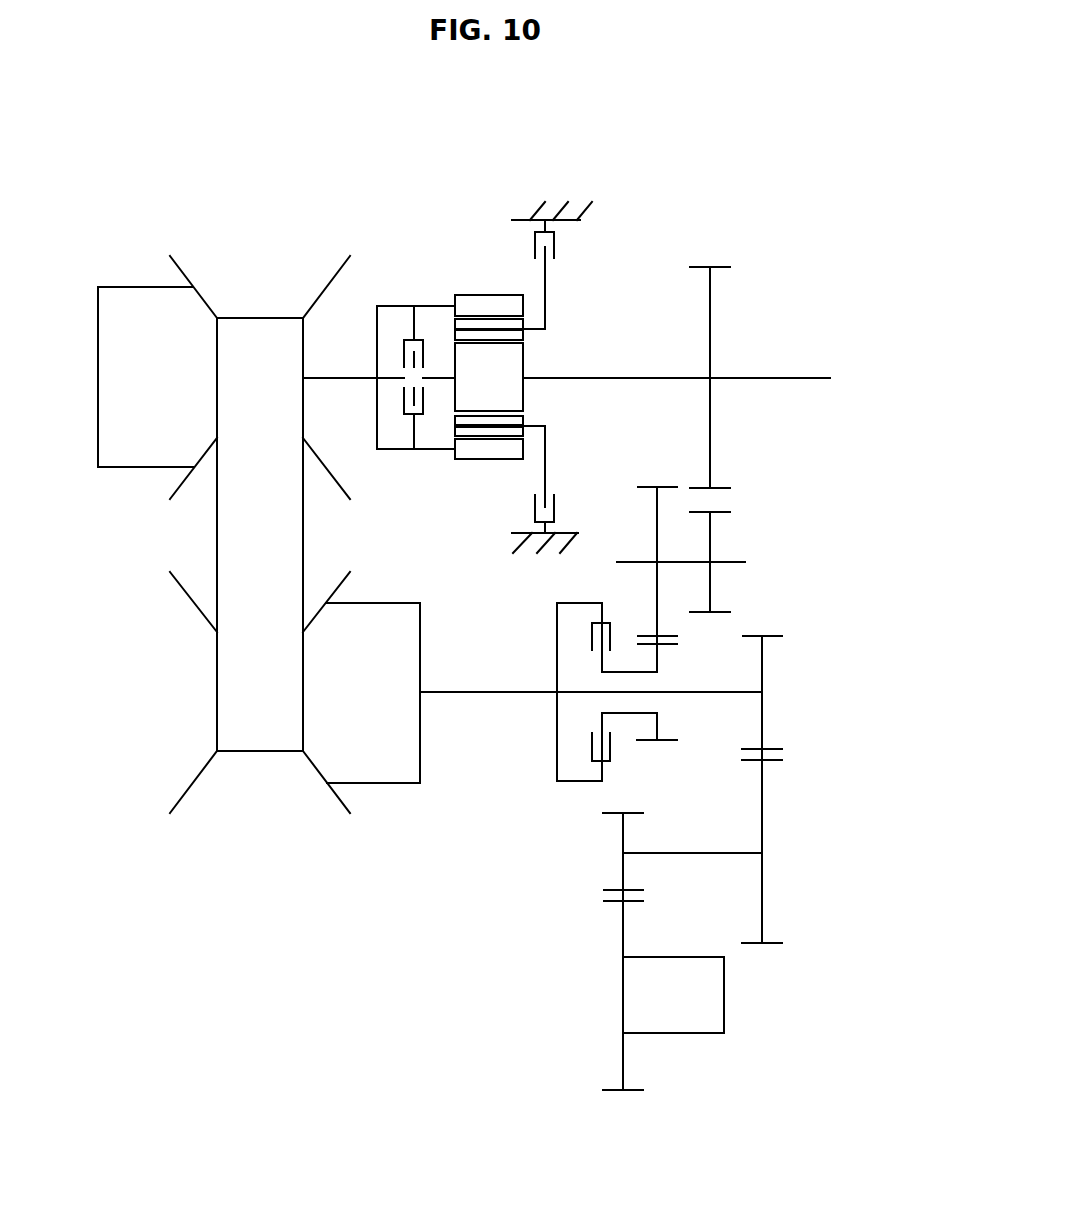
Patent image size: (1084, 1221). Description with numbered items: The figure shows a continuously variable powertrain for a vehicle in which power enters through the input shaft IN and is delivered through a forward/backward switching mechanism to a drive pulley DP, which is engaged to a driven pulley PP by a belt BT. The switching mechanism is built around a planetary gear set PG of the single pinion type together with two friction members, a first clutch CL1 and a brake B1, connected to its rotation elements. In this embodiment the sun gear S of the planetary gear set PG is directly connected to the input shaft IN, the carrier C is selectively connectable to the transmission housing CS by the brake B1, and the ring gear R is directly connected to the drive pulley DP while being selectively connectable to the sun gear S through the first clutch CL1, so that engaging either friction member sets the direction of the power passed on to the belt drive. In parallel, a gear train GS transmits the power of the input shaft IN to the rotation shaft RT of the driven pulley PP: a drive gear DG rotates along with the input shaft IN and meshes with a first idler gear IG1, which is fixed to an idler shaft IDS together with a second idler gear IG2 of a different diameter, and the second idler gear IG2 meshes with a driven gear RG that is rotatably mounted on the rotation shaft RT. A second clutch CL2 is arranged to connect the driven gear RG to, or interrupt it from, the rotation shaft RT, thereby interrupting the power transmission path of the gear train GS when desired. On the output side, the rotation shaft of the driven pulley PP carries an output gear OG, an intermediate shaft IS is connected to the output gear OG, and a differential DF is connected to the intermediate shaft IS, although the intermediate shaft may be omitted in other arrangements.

The drive pulley DP is at (185, 270).
The driven pulley PP is at (187, 802).
The belt BT is at (217, 542).
The first clutch CL1 is at (410, 338).
The planetary gear set PG is at (533, 352).
The ring gear R is at (483, 295).
The sun gear S is at (524, 365).
The carrier C is at (546, 305).
The transmission housing CS is at (533, 217).
The brake B1 is at (555, 245).
The input shaft IN is at (795, 377).
The drive gear DG is at (730, 487).
The first idler gear IG1 is at (730, 512).
The second idler gear IG2 is at (668, 637).
The idler shaft IDS is at (625, 562).
The driven gear RG is at (756, 789).
The gear train GS is at (727, 710).
The rotation shaft RT is at (497, 692).
The second clutch CL2 is at (583, 756).
The output gear OG is at (773, 748).
The intermediate shaft IS is at (740, 852).
The differential DF is at (724, 995).